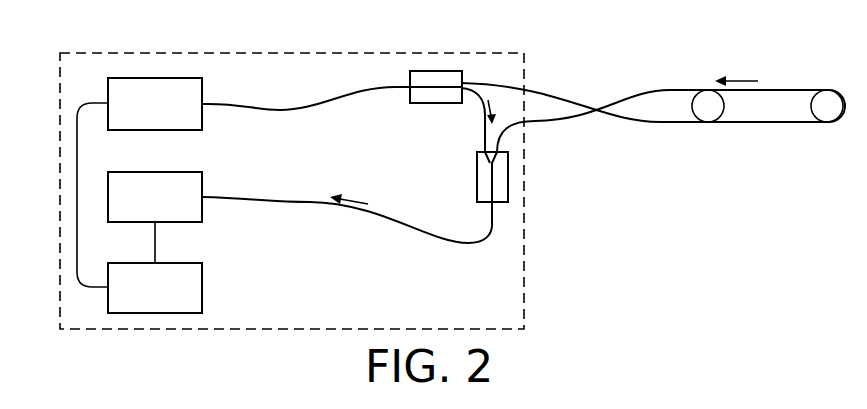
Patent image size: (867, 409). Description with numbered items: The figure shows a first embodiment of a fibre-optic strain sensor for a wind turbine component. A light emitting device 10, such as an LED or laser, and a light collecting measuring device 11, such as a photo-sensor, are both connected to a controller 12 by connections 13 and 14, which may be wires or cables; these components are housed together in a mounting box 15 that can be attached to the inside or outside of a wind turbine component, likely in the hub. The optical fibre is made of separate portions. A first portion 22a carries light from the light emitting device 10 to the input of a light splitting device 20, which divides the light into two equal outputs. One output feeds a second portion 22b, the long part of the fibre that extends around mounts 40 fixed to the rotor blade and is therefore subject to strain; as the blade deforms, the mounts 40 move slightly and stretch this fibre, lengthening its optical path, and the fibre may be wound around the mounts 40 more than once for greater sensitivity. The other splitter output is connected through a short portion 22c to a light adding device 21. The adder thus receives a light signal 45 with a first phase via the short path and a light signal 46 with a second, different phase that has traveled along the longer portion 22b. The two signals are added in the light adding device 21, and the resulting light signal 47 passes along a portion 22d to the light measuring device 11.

The light emitting device 10 is at (168, 115).
The light measuring device 11 is at (168, 208).
The controller 12 is at (168, 301).
The connection 13 is at (155, 240).
The connection 14 is at (77, 193).
The mounting box 15 is at (524, 312).
The light splitting device 20 is at (434, 70).
The light adding device 21 is at (508, 164).
The first optical fibre portion 22a is at (270, 112).
The second optical fibre portion 22b is at (787, 88).
The optical fibre portion 22c is at (483, 118).
The optical fibre portion 22d is at (292, 203).
The mounts 40 is at (708, 114).
The light signal 45 is at (492, 101).
The light signal 46 is at (737, 79).
The resulting light signal 47 is at (357, 198).